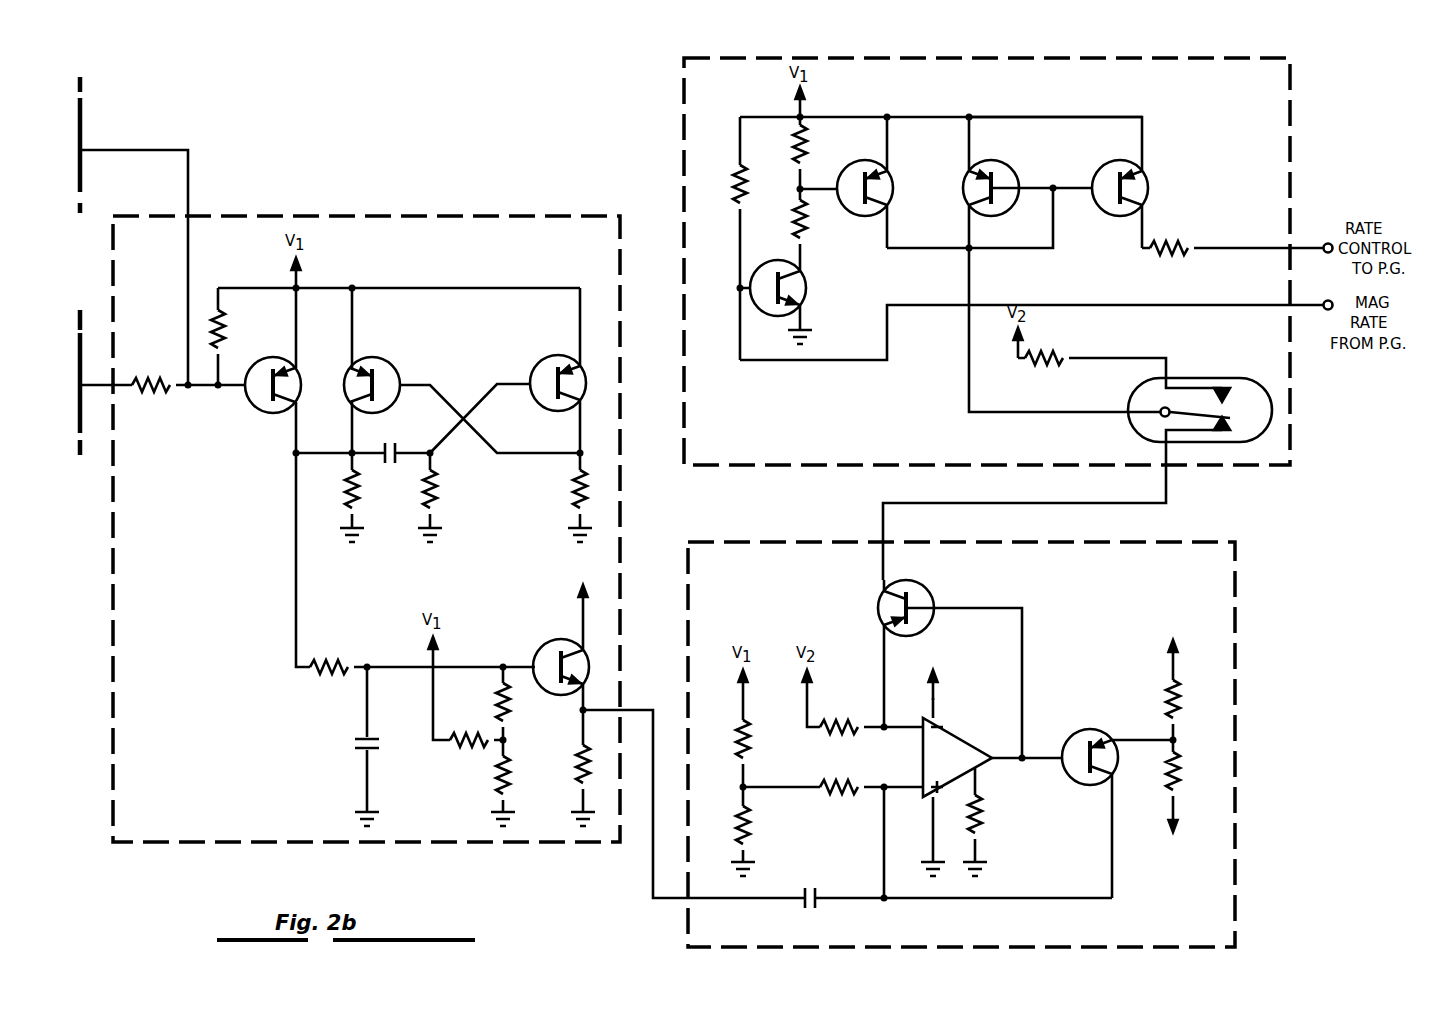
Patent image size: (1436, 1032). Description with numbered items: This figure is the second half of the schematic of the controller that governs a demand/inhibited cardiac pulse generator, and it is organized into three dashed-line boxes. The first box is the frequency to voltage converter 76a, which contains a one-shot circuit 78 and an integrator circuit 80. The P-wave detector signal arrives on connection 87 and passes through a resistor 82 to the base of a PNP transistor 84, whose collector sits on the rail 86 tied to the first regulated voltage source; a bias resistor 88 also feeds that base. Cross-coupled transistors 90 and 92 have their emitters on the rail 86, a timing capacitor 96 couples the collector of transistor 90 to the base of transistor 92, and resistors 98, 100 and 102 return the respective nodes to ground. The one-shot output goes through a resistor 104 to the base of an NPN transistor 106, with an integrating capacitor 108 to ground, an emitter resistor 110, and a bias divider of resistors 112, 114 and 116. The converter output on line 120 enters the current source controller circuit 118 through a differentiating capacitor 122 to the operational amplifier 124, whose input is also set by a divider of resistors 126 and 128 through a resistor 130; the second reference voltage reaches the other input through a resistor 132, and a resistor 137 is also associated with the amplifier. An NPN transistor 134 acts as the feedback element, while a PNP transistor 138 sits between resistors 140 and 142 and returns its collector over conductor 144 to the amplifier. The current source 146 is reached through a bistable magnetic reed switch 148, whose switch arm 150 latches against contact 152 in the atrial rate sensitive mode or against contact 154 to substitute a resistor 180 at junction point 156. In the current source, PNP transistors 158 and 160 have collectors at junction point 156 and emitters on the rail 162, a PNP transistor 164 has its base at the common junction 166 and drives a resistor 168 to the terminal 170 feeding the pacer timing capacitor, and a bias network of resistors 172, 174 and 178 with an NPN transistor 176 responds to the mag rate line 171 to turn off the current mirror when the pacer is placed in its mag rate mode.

The frequency to voltage converter 76a is at (430, 216).
The one-shot circuit 78 is at (482, 390).
The integrator circuit 80 is at (528, 642).
The resistor 82 is at (152, 375).
The PNP transistor 84 is at (300, 370).
The rail 86 is at (470, 288).
The input line 87 is at (115, 150).
The bias resistor 88 is at (230, 330).
The cross-coupled transistor 90 is at (378, 362).
The cross-coupled transistor 92 is at (553, 357).
The timing capacitor 96 is at (392, 445).
The resistor 98 is at (358, 490).
The resistor 100 is at (438, 488).
The resistor 102 is at (566, 488).
The resistor 104 is at (322, 660).
The NPN transistor 106 is at (556, 640).
The integrating capacitor 108 is at (355, 743).
The resistor 110 is at (578, 770).
The resistor 112 is at (470, 735).
The resistor 114 is at (510, 700).
The resistor 116 is at (498, 780).
The current source controller circuit 118 is at (1237, 617).
The line 120 is at (645, 710).
The differentiating capacitor 122 is at (812, 890).
The operational amplifier 124 is at (950, 738).
The resistor 126 is at (750, 748).
The resistor 128 is at (752, 840).
The resistor 130 is at (838, 795).
The resistor 132 is at (842, 735).
The NPN transistor 134 is at (928, 595).
The resistor 137 is at (985, 825).
The PNP transistor 138 is at (1075, 735).
The resistor 140 is at (1165, 700).
The resistor 142 is at (1168, 775).
The conductor 144 is at (1113, 878).
The current source 146 is at (684, 76).
The bistable magnetic reed switch 148 is at (1213, 378).
The switch arm 150 is at (1163, 406).
The contact 152 is at (1232, 421).
The contact 154 is at (1228, 395).
The junction point 156 is at (970, 252).
The PNP transistor 158 is at (893, 180).
The PNP transistor 160 is at (1015, 175).
The rail 162 is at (1065, 117).
The PNP transistor 164 is at (1150, 180).
The common junction 166 is at (1055, 195).
The resistor 168 is at (1178, 250).
The terminal 170 is at (1328, 243).
The line 171 is at (1250, 303).
The resistor 172 is at (806, 160).
The resistor 174 is at (808, 225).
The NPN transistor 176 is at (808, 287).
The resistor 178 is at (735, 190).
The resistor 180 is at (1052, 355).